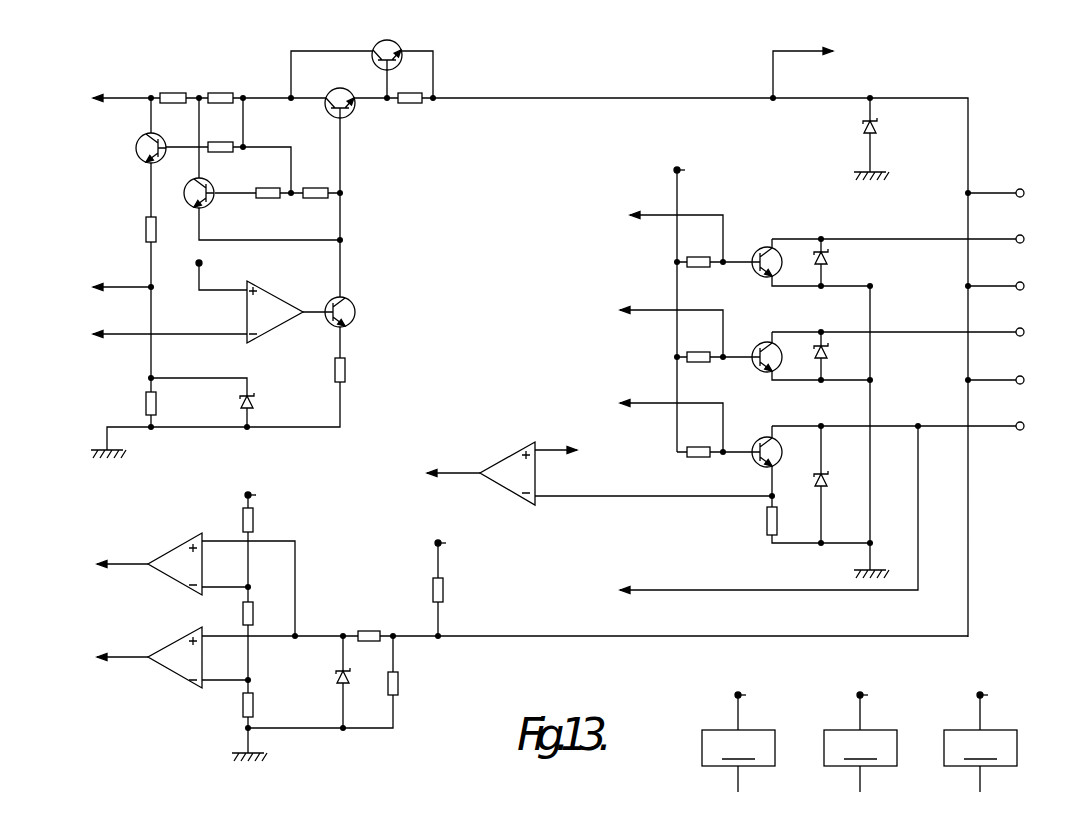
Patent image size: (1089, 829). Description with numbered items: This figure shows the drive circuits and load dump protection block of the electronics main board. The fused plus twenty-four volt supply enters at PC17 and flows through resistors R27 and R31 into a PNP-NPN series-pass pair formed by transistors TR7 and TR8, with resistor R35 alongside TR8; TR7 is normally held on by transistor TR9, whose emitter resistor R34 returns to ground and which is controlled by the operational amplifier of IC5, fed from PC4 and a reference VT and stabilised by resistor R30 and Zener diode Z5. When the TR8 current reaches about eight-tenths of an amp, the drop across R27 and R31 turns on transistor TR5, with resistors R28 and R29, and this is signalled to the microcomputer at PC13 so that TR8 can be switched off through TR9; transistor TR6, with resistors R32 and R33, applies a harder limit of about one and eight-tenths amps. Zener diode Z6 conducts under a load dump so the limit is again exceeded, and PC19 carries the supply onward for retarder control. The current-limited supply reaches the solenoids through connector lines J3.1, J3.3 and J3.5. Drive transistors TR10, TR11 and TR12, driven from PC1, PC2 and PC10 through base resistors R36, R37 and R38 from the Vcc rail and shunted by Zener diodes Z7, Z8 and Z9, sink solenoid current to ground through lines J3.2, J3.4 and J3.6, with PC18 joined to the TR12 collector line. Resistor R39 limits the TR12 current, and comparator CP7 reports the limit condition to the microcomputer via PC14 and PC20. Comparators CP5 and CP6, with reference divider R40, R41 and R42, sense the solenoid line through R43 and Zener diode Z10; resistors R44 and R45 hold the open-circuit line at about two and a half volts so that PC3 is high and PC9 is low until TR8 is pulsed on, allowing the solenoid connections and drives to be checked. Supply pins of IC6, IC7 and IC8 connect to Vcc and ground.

The resistor R27 is at (174, 87).
The resistor R28 is at (220, 136).
The resistor R29 is at (131, 229).
The resistor R30 is at (170, 404).
The resistor R31 is at (220, 87).
The resistor R32 is at (266, 182).
The resistor R33 is at (315, 182).
The resistor R34 is at (359, 371).
The resistor R35 is at (410, 87).
The resistor R36 is at (699, 251).
The resistor R37 is at (699, 346).
The resistor R38 is at (699, 441).
The resistor R39 is at (791, 521).
The resistor R40 is at (267, 521).
The resistor R41 is at (267, 614).
The resistor R42 is at (267, 706).
The resistor R43 is at (368, 624).
The resistor R44 is at (458, 590).
The resistor R45 is at (413, 687).
The transistor TR5 is at (133, 148).
The transistor TR6 is at (212, 203).
The transistor TR7 is at (339, 90).
The transistor TR8 is at (403, 47).
The transistor TR9 is at (358, 312).
The drive transistor TR10 is at (754, 252).
The drive transistor TR11 is at (754, 346).
The drive transistor TR12 is at (754, 441).
The Zener diode Z5 is at (261, 404).
The Zener diode Z6 is at (885, 128).
The Zener diode Z7 is at (837, 261).
The Zener diode Z8 is at (837, 355).
The Zener diode Z9 is at (837, 482).
The Zener diode Z10 is at (326, 676).
The integrated circuit IC5 is at (272, 304).
The comparator CP5 is at (169, 555).
The comparator CP6 is at (169, 647).
The comparator CP7 is at (503, 465).
The integrated circuit IC6 is at (738, 748).
The integrated circuit IC7 is at (860, 748).
The integrated circuit IC8 is at (980, 748).
The supply voltage Vcc is at (633, 432).
The reference voltage input VT is at (221, 271).
The connection PC1 is at (651, 233).
The connection PC2 is at (650, 328).
The connection PC3 is at (103, 657).
The connection PC4 is at (150, 334).
The connection PC9 is at (104, 565).
The connection PC10 is at (649, 422).
The connection PC13 is at (99, 287).
The connection PC14 is at (427, 474).
The connection PC17 is at (104, 99).
The connection PC18 is at (747, 514).
The connection PC19 is at (827, 68).
The connection PC20 is at (585, 451).
The connector J3 line 1 J3.1 is at (1041, 193).
The connector J3 line 2 J3.2 is at (1041, 239).
The connector J3 line 3 J3.3 is at (1041, 286).
The connector J3 line 4 J3.4 is at (1041, 333).
The connector J3 line 5 J3.5 is at (1041, 381).
The connector J3 line 6 J3.6 is at (1041, 427).